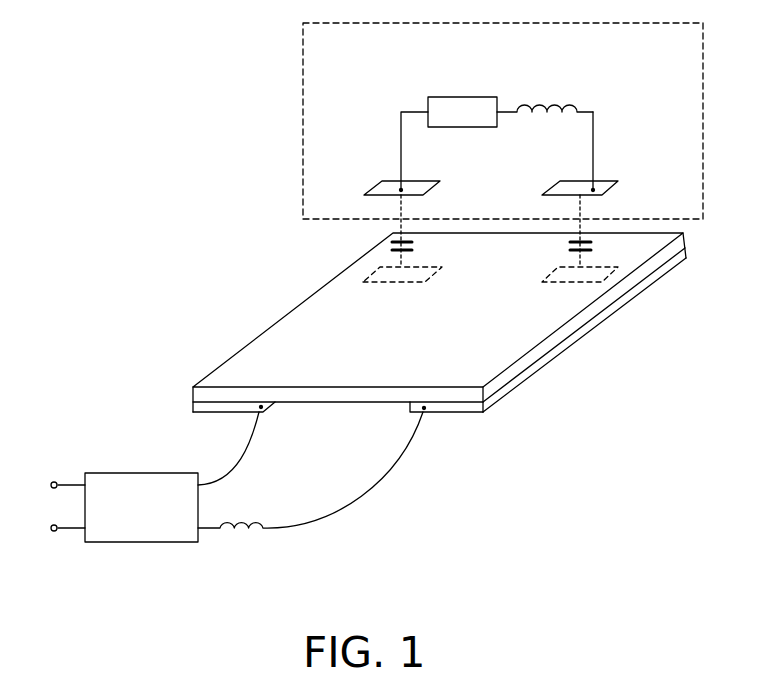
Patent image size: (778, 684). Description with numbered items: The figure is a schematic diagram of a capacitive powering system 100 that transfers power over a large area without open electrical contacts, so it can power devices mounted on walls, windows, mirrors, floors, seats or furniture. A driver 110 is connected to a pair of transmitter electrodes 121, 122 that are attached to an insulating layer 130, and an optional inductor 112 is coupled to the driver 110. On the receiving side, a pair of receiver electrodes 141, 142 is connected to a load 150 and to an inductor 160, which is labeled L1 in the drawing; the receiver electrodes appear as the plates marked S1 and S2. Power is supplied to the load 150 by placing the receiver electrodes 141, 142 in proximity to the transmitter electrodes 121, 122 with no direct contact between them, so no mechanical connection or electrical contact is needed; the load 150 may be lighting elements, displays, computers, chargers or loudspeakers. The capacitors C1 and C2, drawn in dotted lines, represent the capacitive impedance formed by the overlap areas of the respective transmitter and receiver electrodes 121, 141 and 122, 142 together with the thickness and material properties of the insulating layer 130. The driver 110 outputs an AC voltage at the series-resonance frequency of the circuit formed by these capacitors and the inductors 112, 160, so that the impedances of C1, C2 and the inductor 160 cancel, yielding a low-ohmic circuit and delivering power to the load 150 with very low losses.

The capacitive powering system 100 is at (131, 71).
The driver 110 is at (142, 542).
The inductor 112 is at (258, 537).
The transmitter electrode 121 is at (193, 404).
The transmitter electrode 122 is at (468, 412).
The insulating layer 130 is at (603, 300).
The receiver electrode 141 is at (401, 146).
The receiver electrode 142 is at (593, 144).
The load 150 is at (472, 96).
The inductor 160 is at (567, 76).
The first receiver electrode S1 is at (395, 181).
The second receiver electrode S2 is at (616, 181).
The capacitor C1 is at (391, 241).
The capacitor C2 is at (569, 246).
The receiver inductor L1 is at (545, 91).